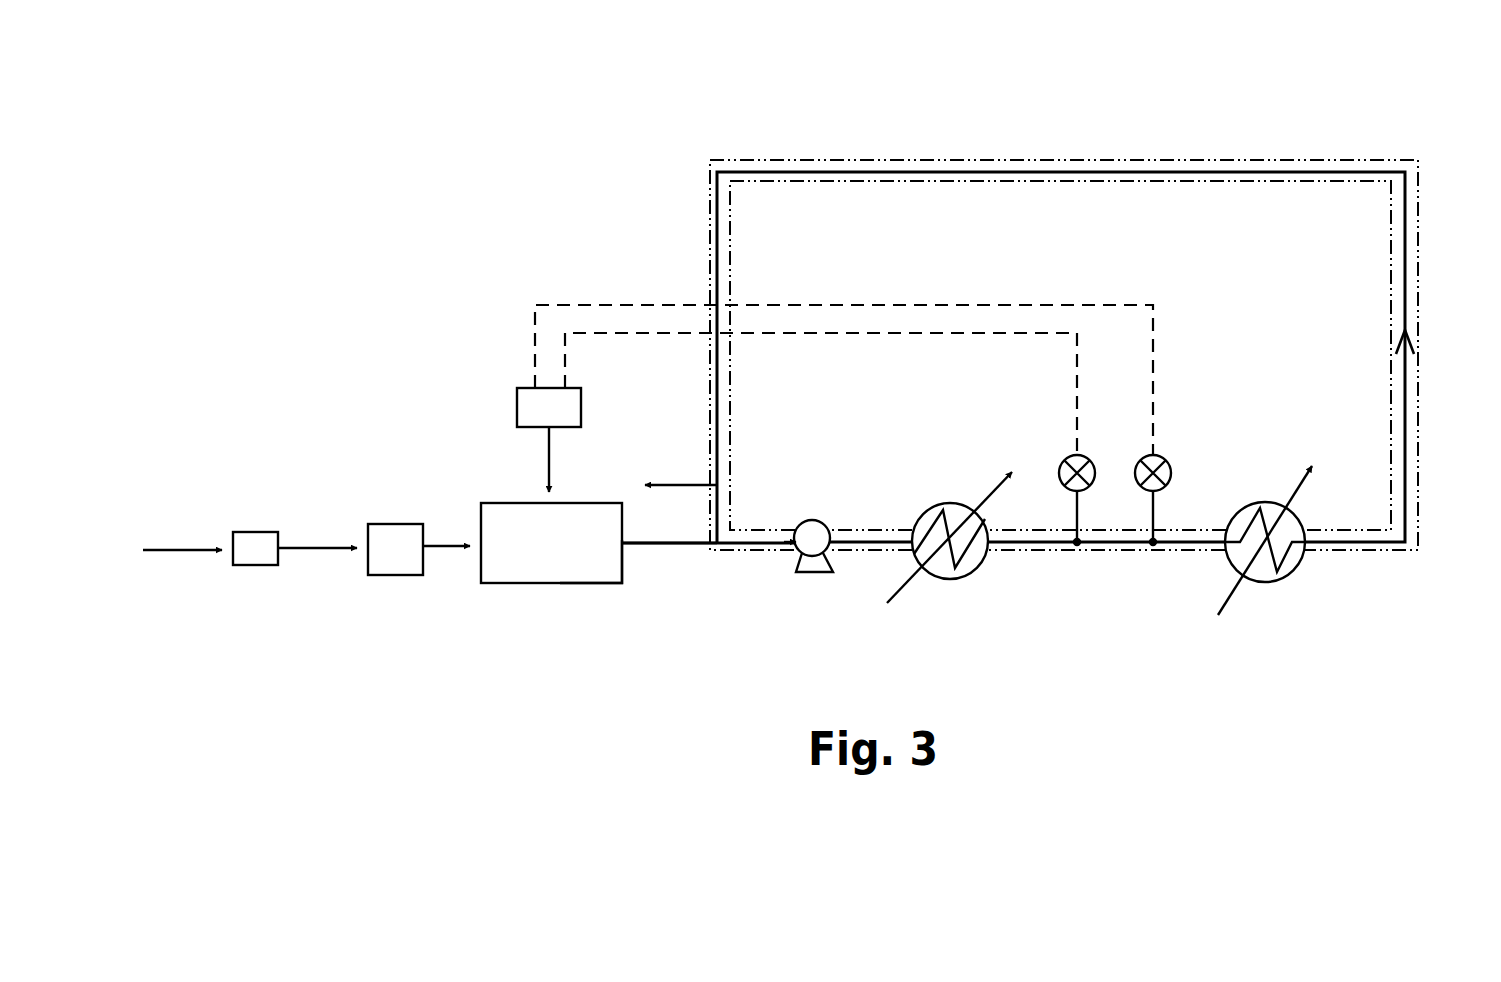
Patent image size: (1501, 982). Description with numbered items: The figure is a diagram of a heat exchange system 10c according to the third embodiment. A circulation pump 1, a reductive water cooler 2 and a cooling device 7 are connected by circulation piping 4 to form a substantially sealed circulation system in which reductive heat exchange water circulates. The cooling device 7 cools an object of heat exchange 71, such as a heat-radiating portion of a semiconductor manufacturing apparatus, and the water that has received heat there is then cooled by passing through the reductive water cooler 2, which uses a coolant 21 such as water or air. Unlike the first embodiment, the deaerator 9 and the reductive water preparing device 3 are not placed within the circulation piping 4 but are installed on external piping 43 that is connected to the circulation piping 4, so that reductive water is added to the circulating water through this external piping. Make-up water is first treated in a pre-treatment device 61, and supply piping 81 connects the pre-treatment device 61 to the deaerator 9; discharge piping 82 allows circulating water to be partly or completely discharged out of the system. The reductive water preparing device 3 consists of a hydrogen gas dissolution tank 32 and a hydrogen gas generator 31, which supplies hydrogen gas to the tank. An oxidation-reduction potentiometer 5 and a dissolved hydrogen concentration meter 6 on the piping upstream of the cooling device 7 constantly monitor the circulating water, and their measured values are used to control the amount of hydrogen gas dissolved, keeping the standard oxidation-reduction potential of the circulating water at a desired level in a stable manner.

The heat exchange system 10c is at (990, 106).
The circulation pump 1 is at (800, 572).
The reductive water cooler 2 is at (948, 580).
The coolant 21 is at (992, 502).
The reductive water preparing device 3 is at (540, 592).
The hydrogen gas generator 31 is at (517, 413).
The hydrogen gas dissolution tank 32 is at (590, 578).
The circulation piping 4 is at (1405, 398).
The external piping 43 is at (683, 546).
The oxidation-reduction potentiometer 5 is at (1060, 465).
The dissolved hydrogen concentration meter 6 is at (1168, 463).
The pre-treatment device 61 is at (240, 567).
The cooling device 7 is at (1282, 581).
The object of heat exchange 71 is at (1300, 480).
The supply piping 81 is at (292, 549).
The discharge piping 82 is at (660, 485).
The deaerator 9 is at (398, 577).